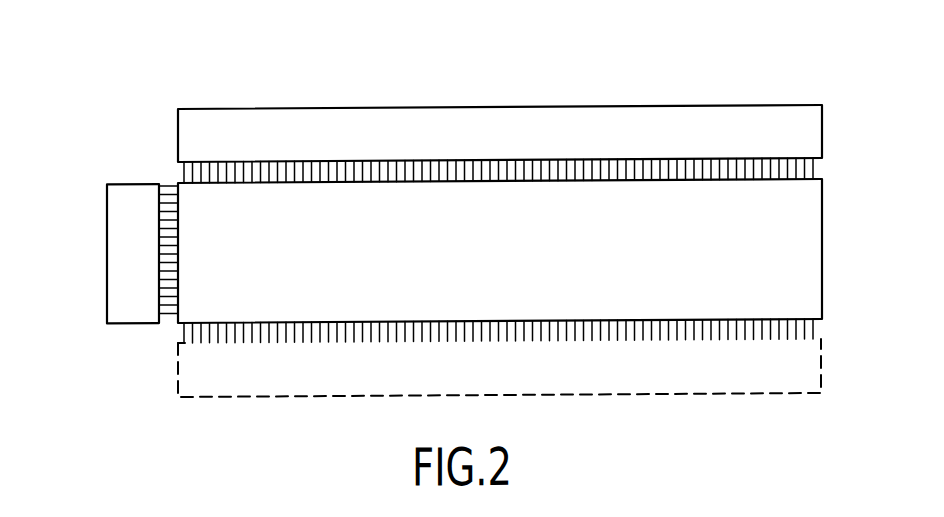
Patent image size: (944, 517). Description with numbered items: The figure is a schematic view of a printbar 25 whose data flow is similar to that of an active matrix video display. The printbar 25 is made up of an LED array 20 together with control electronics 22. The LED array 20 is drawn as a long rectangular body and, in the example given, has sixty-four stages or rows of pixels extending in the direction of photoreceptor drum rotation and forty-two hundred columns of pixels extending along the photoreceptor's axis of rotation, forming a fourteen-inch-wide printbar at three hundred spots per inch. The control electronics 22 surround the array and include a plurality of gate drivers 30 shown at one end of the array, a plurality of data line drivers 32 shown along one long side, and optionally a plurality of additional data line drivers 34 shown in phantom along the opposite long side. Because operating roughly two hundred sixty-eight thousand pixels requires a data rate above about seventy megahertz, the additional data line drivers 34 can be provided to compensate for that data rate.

The LED array 20 is at (792, 257).
The control electronics 22 is at (190, 139).
The printbar 25 is at (848, 169).
The gate drivers 30 is at (115, 297).
The data line drivers 32 is at (439, 133).
The additional data line drivers 34 is at (300, 377).